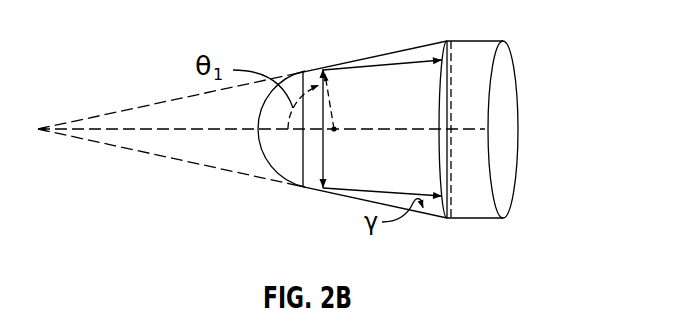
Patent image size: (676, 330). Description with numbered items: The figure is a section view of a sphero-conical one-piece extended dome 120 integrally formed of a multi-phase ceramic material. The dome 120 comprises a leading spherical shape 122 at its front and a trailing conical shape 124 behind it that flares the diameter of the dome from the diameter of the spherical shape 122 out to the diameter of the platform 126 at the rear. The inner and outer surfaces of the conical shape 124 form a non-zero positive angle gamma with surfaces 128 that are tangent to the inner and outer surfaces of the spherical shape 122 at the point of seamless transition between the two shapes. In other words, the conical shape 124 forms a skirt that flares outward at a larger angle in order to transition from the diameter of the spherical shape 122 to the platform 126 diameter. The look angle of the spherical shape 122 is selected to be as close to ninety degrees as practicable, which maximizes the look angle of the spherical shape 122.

The one-piece extended dome 120 is at (289, 47).
The leading spherical shape 122 is at (272, 172).
The trailing conical shape 124 is at (358, 199).
The platform 126 is at (510, 43).
The tangent surfaces 128 is at (382, 188).